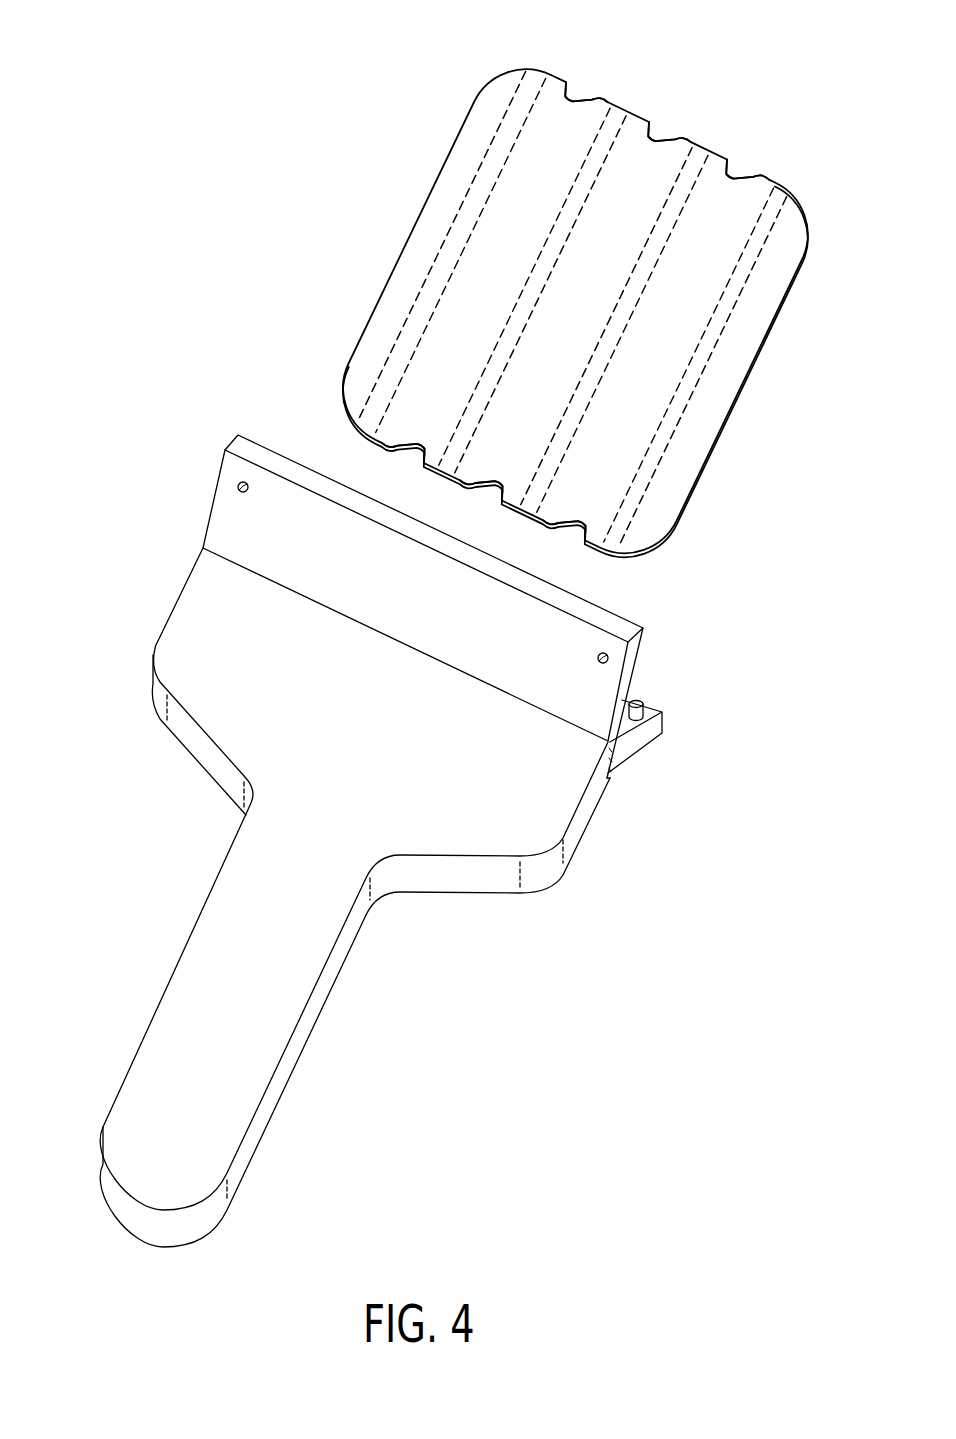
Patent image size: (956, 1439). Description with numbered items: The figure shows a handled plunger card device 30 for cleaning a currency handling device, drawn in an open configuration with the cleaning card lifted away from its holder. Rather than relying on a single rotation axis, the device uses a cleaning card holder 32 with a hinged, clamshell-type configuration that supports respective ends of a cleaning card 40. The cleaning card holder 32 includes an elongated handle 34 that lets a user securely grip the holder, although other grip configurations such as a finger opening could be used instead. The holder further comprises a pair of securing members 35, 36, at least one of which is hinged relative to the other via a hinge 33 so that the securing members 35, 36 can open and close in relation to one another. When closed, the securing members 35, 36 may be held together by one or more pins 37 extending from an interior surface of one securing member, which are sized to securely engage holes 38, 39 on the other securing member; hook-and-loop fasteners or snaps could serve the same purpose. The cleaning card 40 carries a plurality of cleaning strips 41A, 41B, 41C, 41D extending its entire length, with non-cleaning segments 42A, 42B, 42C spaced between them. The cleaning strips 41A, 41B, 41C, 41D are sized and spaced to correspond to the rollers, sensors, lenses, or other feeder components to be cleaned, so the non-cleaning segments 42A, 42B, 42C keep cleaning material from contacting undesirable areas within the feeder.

The handled plunger card device 30 is at (113, 103).
The cleaning card holder 32 is at (365, 1025).
The hinge 33 is at (612, 790).
The elongated handle 34 is at (187, 972).
The securing member 35 is at (233, 535).
The securing member 36 is at (628, 735).
The pin 37 is at (641, 708).
The hole 38 is at (608, 659).
The hole 39 is at (240, 484).
The cleaning card 40 is at (397, 202).
The cleaning strip 41A is at (537, 75).
The cleaning strip 41B is at (618, 117).
The cleaning strip 41C is at (703, 153).
The cleaning strip 41D is at (782, 200).
The non-cleaning segment 42A is at (570, 108).
The non-cleaning segment 42B is at (652, 147).
The non-cleaning segment 42C is at (740, 185).